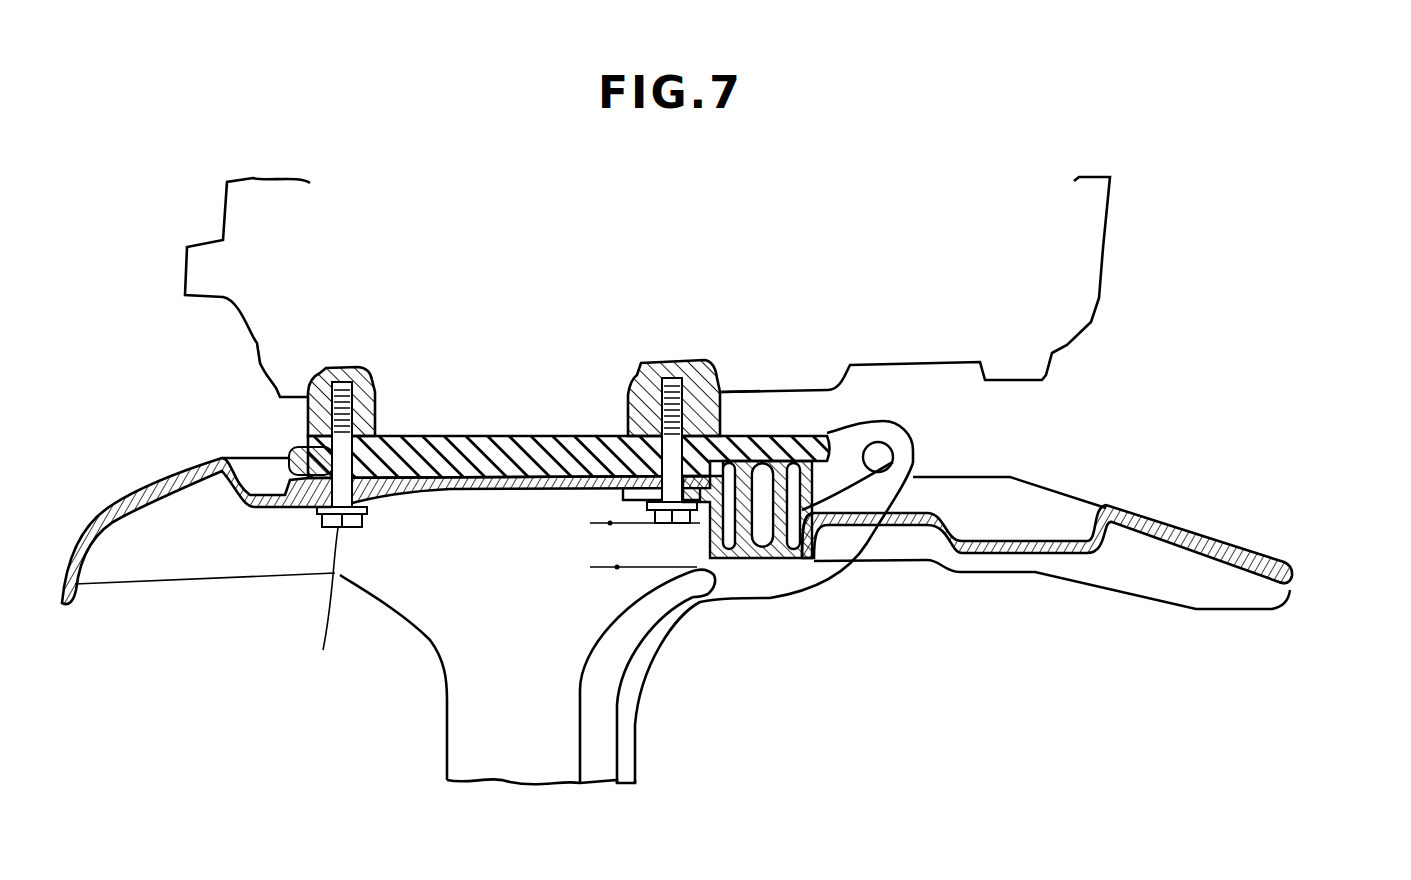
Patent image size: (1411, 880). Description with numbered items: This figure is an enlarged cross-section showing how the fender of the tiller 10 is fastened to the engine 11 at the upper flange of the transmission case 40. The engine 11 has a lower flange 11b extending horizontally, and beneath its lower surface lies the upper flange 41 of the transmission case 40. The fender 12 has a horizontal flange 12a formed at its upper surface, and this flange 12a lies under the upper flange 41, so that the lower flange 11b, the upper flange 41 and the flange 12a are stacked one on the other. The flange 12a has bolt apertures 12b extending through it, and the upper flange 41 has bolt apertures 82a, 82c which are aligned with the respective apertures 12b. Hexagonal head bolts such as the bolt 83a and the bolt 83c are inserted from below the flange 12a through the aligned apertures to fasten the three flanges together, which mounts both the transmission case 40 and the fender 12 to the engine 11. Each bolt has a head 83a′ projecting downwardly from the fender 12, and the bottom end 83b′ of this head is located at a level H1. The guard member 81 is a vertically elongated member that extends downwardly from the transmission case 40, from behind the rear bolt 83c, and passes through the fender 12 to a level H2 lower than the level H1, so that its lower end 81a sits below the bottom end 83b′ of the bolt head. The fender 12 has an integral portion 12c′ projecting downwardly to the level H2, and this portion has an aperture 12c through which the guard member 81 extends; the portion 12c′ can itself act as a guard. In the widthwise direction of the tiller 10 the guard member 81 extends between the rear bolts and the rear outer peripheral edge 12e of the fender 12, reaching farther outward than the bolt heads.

The tiller 10 is at (155, 192).
The engine 11 is at (1115, 232).
The lower flange 11b is at (743, 436).
The fender 12 is at (1187, 522).
The horizontal flange 12a is at (461, 500).
The bolt apertures 12b is at (345, 522).
The aperture 12c is at (790, 598).
The portion projecting downwardly 12c′ is at (808, 540).
The rear outer peripheral edge 12e is at (1297, 586).
The transmission case 40 is at (638, 720).
The upper flange 41 is at (468, 460).
The guard member 81 is at (893, 452).
The lower end 81a is at (760, 563).
The bolt aperture 82a is at (305, 452).
The bolt aperture 82c is at (622, 438).
The bolt 83a is at (370, 495).
The head 83a′ is at (666, 526).
The bottom end 83b′ is at (697, 526).
The bolt 83c is at (712, 478).
The level H1 is at (602, 524).
The level H2 is at (607, 568).